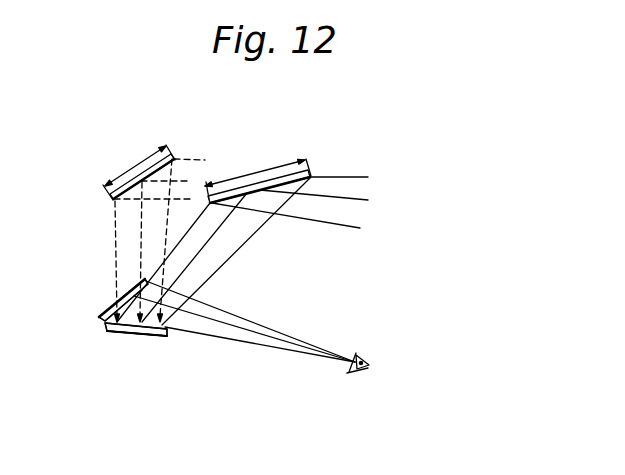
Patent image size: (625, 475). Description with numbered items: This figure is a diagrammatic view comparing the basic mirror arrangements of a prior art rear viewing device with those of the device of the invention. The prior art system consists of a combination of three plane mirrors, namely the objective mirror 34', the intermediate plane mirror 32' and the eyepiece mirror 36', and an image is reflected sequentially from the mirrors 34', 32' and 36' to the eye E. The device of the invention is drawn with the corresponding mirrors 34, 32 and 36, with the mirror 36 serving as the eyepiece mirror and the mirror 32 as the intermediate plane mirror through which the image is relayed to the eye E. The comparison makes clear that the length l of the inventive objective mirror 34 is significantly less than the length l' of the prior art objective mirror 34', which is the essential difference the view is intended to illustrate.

The objective mirror 34 is at (154, 219).
The objective mirror 34' is at (242, 232).
The eyepiece mirror 36 is at (93, 293).
The eyepiece mirror 36' is at (93, 300).
The plane mirror 32 is at (146, 361).
The plane mirror 32' is at (146, 361).
The eye E is at (363, 371).